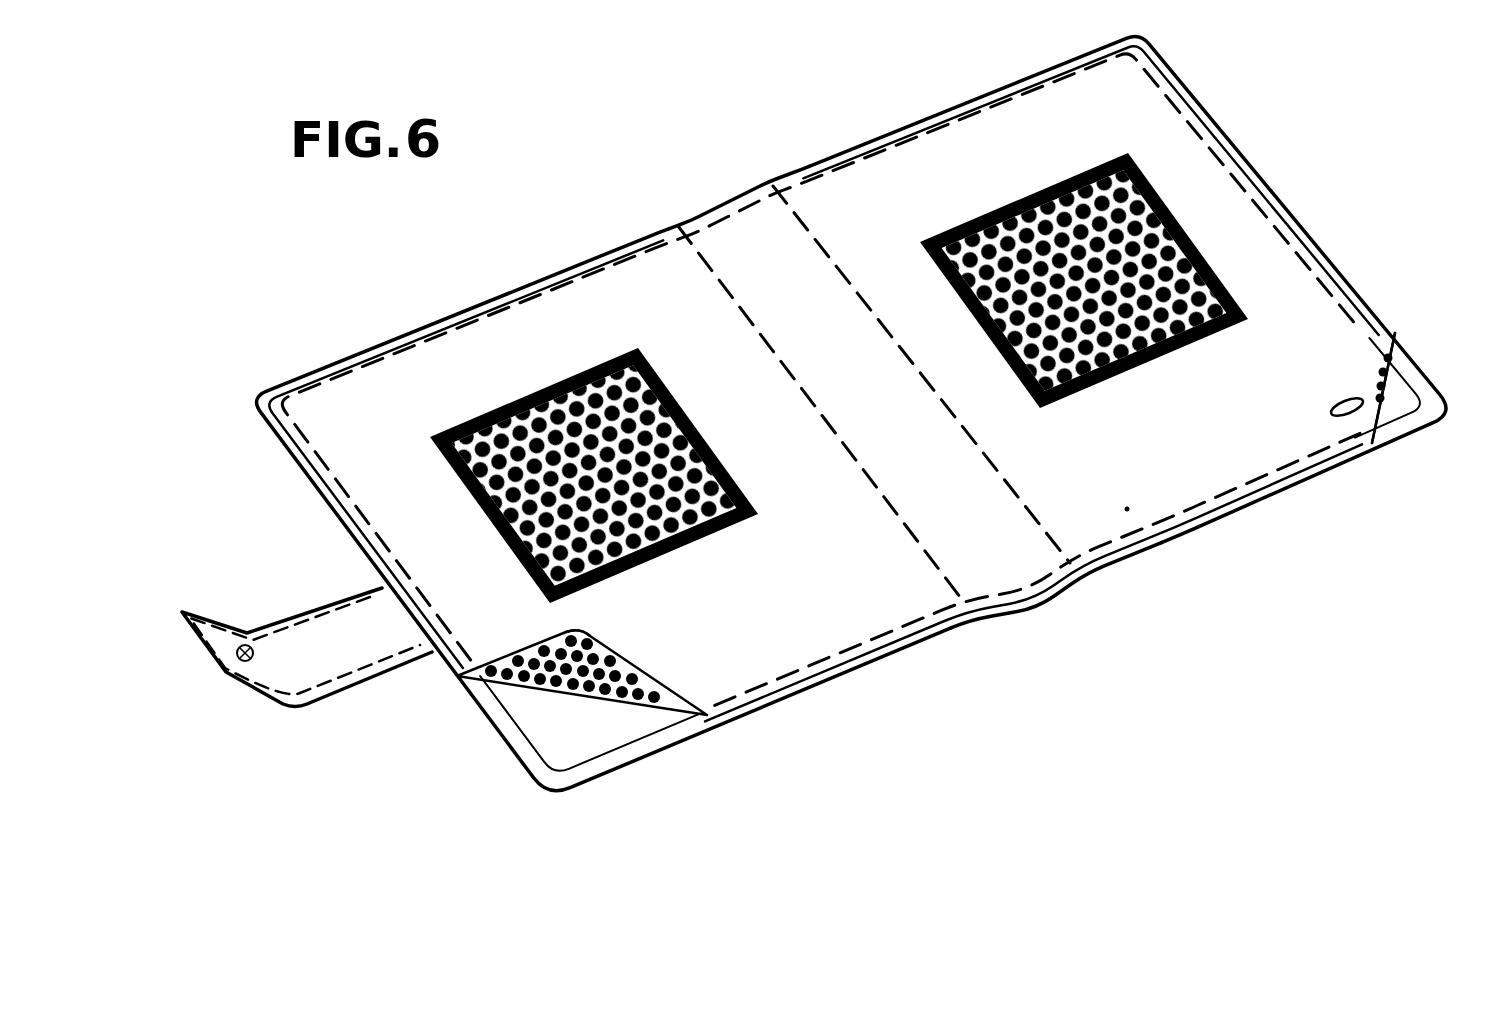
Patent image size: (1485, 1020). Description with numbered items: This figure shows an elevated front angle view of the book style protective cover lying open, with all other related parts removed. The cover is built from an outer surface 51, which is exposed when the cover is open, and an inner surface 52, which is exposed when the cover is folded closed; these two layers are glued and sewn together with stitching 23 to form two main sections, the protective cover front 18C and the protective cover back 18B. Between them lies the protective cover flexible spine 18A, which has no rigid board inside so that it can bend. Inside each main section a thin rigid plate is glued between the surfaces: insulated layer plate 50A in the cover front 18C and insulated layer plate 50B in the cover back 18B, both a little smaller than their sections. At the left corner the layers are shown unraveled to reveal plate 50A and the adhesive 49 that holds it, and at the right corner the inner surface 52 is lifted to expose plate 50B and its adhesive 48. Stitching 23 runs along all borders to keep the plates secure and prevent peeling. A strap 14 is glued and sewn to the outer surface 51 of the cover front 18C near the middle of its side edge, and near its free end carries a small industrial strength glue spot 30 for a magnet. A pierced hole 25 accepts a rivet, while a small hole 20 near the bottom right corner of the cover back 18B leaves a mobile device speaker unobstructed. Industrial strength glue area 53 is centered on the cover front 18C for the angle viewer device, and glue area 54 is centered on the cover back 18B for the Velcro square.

The strap 14 is at (323, 648).
The industrial strength glue spot 30 is at (245, 637).
The protective cover flexible spine 18A is at (758, 250).
The protective cover back 18B is at (997, 137).
The protective cover front 18C is at (473, 347).
The industrial strength glue area 53 is at (508, 407).
The industrial strength glue area 54 is at (1008, 207).
The inner surface 52 is at (500, 662).
The adhesive 49 is at (627, 652).
The insulated layer plate 50A is at (557, 724).
The insulated layer plate 50B is at (1392, 400).
The outer surface 51 is at (637, 743).
The adhesive 48 is at (1368, 380).
The small hole 20 is at (1335, 398).
The pierced hole 25 is at (1128, 505).
The stitching 23 is at (892, 632).